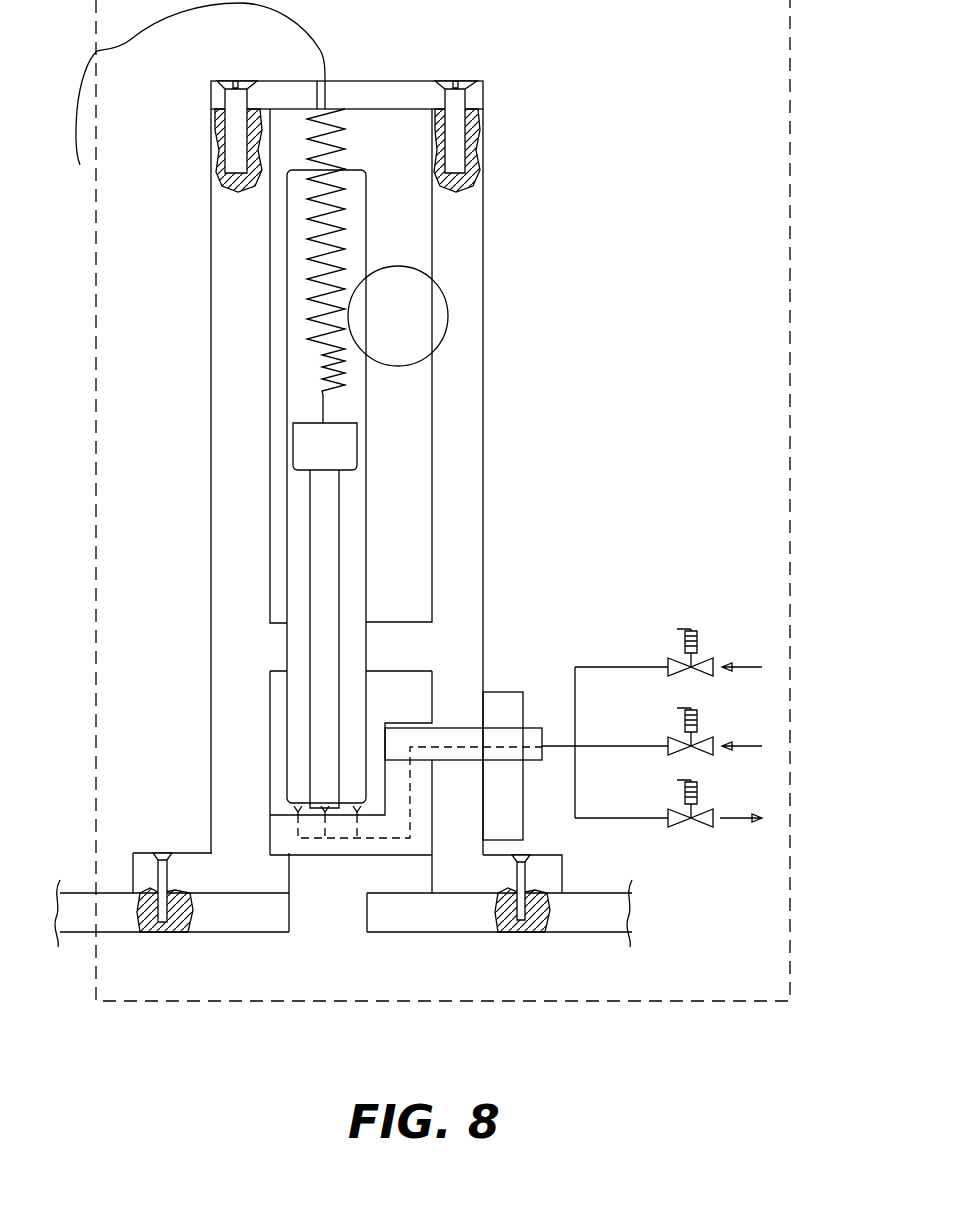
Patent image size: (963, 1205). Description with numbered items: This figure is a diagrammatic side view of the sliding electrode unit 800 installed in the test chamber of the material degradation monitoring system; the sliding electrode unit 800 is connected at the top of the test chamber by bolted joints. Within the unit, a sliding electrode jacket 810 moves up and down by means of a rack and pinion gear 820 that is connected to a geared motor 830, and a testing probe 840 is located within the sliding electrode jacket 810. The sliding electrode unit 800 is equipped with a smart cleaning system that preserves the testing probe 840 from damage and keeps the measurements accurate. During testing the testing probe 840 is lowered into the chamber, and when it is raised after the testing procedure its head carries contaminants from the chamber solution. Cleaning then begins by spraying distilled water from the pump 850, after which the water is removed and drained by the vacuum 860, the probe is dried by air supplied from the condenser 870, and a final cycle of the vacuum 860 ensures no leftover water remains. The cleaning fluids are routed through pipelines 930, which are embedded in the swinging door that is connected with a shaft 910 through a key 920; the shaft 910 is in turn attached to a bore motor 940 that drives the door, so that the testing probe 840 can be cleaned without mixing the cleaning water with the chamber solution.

The sliding electrode unit 800 is at (212, 768).
The sliding electrode jacket 810 is at (353, 557).
The rack and pinion gear 820 is at (402, 412).
The geared motor 830 is at (448, 302).
The testing probe 840 is at (322, 527).
The pump 850 is at (748, 667).
The vacuum 860 is at (733, 818).
The condenser 870 is at (748, 746).
The shaft 910 is at (492, 750).
The key 920 is at (513, 757).
The pipelines 930 is at (501, 692).
The bore motor 940 is at (345, 838).